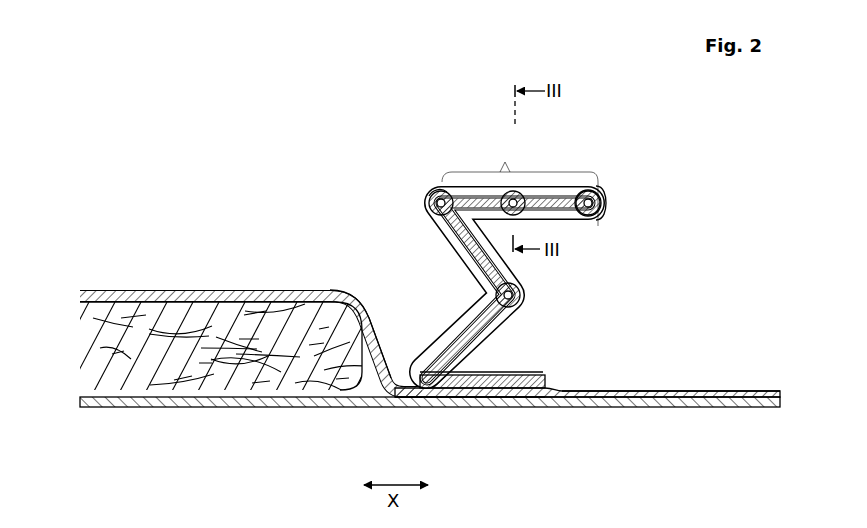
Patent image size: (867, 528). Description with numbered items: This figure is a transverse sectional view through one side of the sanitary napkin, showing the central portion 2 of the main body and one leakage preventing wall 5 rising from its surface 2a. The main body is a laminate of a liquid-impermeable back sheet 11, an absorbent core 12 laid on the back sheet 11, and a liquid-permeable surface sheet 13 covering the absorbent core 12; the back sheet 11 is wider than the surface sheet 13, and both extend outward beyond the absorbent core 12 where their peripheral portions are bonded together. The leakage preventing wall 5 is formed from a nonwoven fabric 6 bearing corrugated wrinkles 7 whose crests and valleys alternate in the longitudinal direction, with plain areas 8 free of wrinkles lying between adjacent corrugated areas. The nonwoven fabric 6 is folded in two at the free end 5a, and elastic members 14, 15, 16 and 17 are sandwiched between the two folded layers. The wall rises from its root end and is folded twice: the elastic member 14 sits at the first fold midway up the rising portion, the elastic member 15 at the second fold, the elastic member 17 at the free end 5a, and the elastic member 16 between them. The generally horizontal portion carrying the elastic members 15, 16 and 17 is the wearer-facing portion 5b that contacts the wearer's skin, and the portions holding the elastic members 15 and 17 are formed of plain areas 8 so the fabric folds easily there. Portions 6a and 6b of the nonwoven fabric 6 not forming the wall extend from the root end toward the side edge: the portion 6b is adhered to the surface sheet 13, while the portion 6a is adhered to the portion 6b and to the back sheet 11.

The central portion 2 is at (142, 258).
The surface of the central portion 2a is at (203, 287).
The leakage preventing wall 5 is at (423, 258).
The free end 5a is at (601, 206).
The wearer-facing portion 5b is at (520, 183).
The nonwoven fabric 6 is at (540, 373).
The portion of the nonwoven fabric 6a is at (712, 391).
The portion of the nonwoven fabric 6b is at (512, 397).
The corrugated wrinkles 7 is at (552, 187).
The plain area 8 is at (432, 200).
The back sheet 11 is at (238, 407).
The absorbent core 12 is at (174, 373).
The surface sheet 13 is at (272, 290).
The elastic member 14 is at (519, 296).
The elastic member 15 is at (438, 192).
The elastic member 16 is at (510, 195).
The elastic member 17 is at (601, 190).